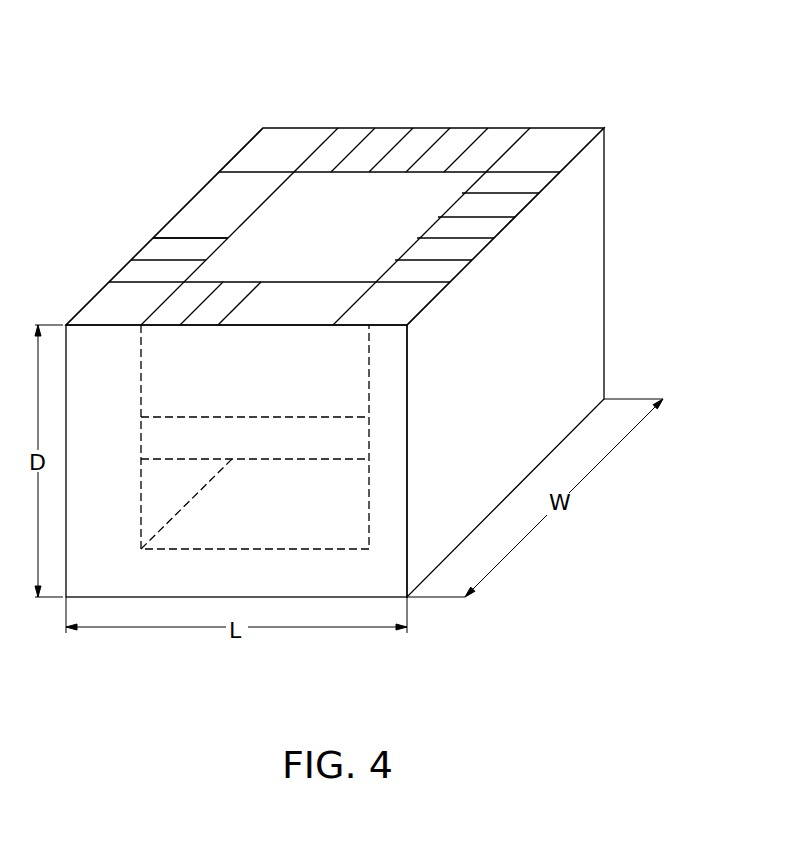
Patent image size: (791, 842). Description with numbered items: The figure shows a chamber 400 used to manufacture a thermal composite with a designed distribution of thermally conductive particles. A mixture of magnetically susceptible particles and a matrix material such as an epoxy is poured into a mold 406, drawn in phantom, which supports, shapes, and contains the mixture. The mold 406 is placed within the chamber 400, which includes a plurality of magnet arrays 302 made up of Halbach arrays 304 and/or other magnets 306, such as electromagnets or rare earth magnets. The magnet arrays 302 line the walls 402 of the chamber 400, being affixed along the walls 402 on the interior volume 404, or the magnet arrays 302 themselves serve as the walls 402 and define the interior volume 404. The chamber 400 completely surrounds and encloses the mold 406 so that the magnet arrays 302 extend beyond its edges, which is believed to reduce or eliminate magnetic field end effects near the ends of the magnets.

The chamber 400 is at (376, 362).
The walls 402 is at (605, 265).
The interior volume 404 is at (255, 457).
The mold 406 is at (152, 440).
The magnet arrays 302 is at (339, 226).
The Halbach arrays 304 is at (142, 248).
The other magnets 306 is at (192, 200).